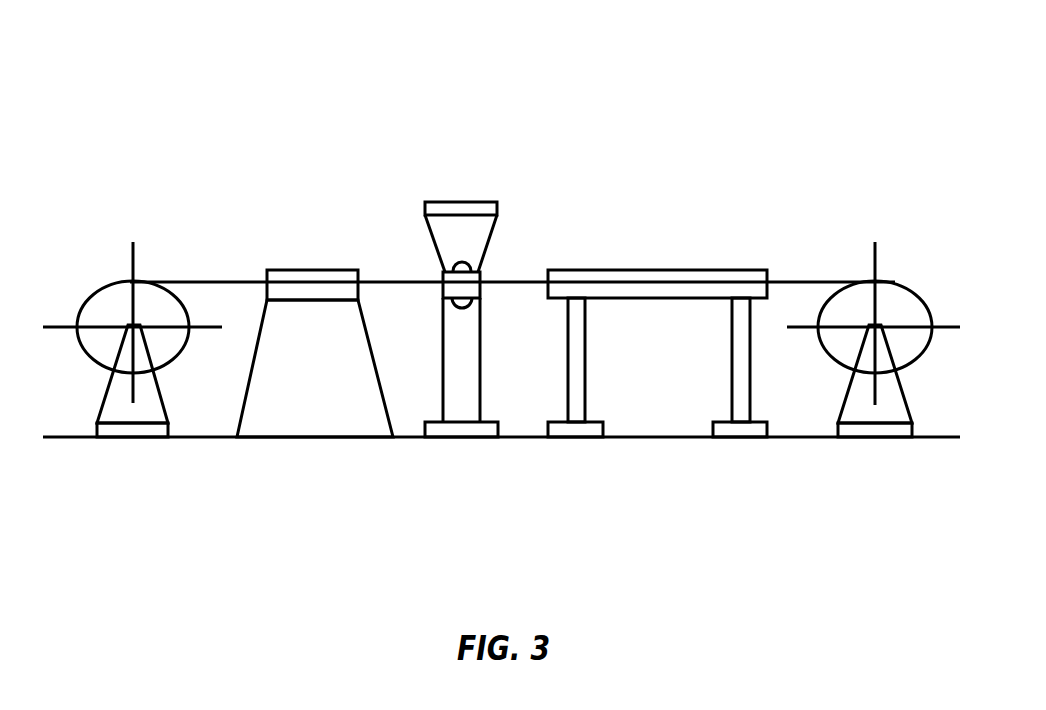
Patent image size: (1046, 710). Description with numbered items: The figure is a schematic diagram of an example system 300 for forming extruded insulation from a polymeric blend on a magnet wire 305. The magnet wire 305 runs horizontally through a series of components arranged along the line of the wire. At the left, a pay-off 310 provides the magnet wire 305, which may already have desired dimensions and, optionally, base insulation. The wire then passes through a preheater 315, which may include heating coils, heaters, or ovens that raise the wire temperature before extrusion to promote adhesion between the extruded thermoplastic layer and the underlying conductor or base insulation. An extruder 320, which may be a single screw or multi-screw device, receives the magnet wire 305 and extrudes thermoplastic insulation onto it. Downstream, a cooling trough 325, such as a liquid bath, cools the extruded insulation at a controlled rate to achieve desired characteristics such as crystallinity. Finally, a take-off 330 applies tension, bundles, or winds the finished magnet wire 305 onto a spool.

The system 300 is at (765, 82).
The magnet wire 305 is at (216, 279).
The pay-off 310 is at (112, 316).
The preheater 315 is at (325, 337).
The extruder 320 is at (484, 270).
The cooling trough 325 is at (649, 267).
The take-off 330 is at (881, 317).